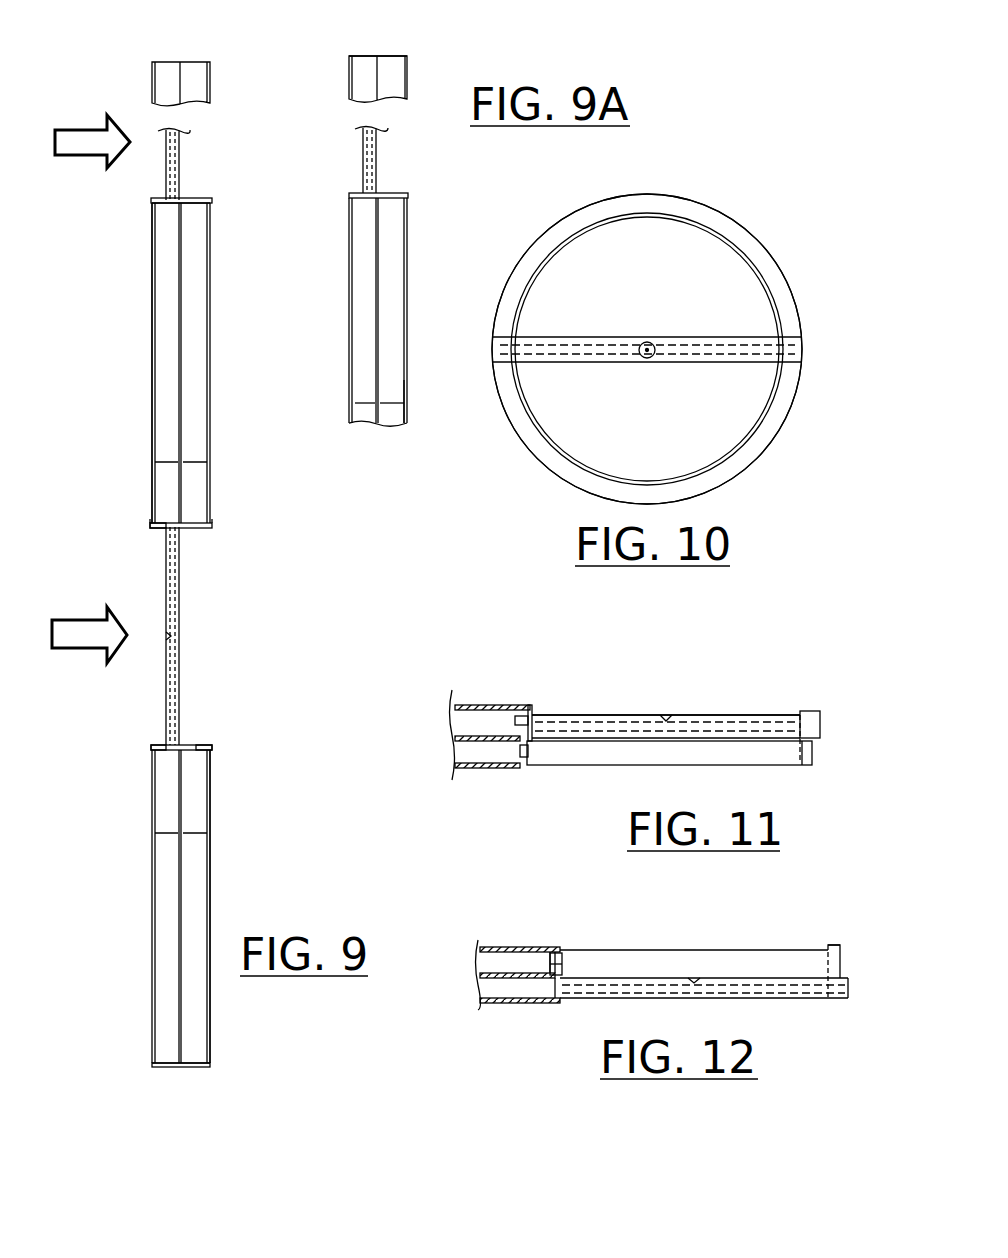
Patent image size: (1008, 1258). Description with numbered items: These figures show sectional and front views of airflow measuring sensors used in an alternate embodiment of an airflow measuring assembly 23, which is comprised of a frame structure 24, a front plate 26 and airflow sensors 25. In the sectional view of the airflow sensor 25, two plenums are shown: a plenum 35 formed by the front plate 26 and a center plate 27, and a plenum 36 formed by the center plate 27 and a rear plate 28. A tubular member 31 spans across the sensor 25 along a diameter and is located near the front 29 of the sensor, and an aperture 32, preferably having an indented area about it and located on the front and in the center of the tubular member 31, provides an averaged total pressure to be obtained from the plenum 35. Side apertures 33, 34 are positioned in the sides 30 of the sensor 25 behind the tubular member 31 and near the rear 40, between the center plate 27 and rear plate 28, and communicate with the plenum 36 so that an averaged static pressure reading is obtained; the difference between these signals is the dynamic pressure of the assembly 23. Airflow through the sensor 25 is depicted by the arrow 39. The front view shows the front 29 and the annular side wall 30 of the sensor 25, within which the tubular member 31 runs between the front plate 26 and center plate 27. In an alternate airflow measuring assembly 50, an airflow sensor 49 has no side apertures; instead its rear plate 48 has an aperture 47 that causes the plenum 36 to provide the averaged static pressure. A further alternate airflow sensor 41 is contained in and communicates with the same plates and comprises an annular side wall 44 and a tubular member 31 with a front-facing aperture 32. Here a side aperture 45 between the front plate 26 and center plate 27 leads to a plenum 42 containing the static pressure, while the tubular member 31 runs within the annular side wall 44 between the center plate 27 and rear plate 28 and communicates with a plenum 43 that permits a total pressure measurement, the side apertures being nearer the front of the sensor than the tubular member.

In FIG. 9, the airflow measuring assembly 23 is at (133, 1073).
In FIG. 9, the frame structure 24 is at (190, 62).
In FIG. 9A, the frame structure 24 is at (395, 56).
In FIG. 9, the airflow sensor 25 is at (222, 183).
In FIG. 10, the airflow sensor 25 is at (805, 293).
In FIG. 11, the airflow sensor 25 is at (650, 685).
In FIG. 9, the front plate 26 is at (152, 868).
In FIG. 9A, the front plate 26 is at (349, 335).
In FIG. 11, the front plate 26 is at (505, 706).
In FIG. 12, the front plate 26 is at (497, 945).
In FIG. 9, the center plate 27 is at (178, 1035).
In FIG. 9A, the center plate 27 is at (378, 318).
In FIG. 11, the center plate 27 is at (480, 738).
In FIG. 12, the center plate 27 is at (482, 973).
In FIG. 9, the rear plate 28 is at (212, 262).
In FIG. 11, the rear plate 28 is at (505, 768).
In FIG. 12, the rear plate 28 is at (490, 1003).
In FIG. 9, the front 29 is at (151, 747).
In FIG. 10, the front 29 is at (758, 258).
In FIG. 9, the annular side wall 30 is at (161, 528).
In FIG. 10, the annular side wall 30 is at (753, 432).
In FIG. 11, the annular side wall 30 is at (535, 710).
In FIG. 9, the tubular member 31 is at (166, 165).
In FIG. 9A, the tubular member 31 is at (363, 155).
In FIG. 10, the tubular member 31 is at (567, 337).
In FIG. 11, the tubular member 31 is at (738, 715).
In FIG. 12, the tubular member 31 is at (636, 985).
In FIG. 9, the aperture 32 is at (166, 636).
In FIG. 10, the aperture 32 is at (640, 357).
In FIG. 11, the aperture 32 is at (668, 714).
In FIG. 12, the aperture 32 is at (695, 975).
In FIG. 9, the side aperture 33 is at (198, 198).
In FIG. 11, the side aperture 33 is at (532, 752).
In FIG. 9, the side aperture 34 is at (198, 528).
In FIG. 9, the plenum 35 is at (166, 637).
In FIG. 9A, the plenum 35 is at (366, 393).
In FIG. 9, the plenum 36 is at (195, 637).
In FIG. 9A, the plenum 36 is at (393, 393).
In FIG. 9, the arrow 39 is at (77, 158).
In FIG. 9, the rear 40 is at (211, 748).
In FIG. 12, the airflow sensor 41 is at (797, 925).
In FIG. 12, the plenum 42 is at (515, 960).
In FIG. 12, the plenum 43 is at (505, 988).
In FIG. 12, the annular side wall 44 is at (828, 952).
In FIG. 12, the side aperture 45 is at (562, 963).
In FIG. 9A, the aperture 47 is at (408, 393).
In FIG. 9A, the rear plate 48 is at (408, 255).
In FIG. 9A, the airflow sensor 49 is at (405, 175).
In FIG. 9A, the airflow measuring assembly 50 is at (417, 83).